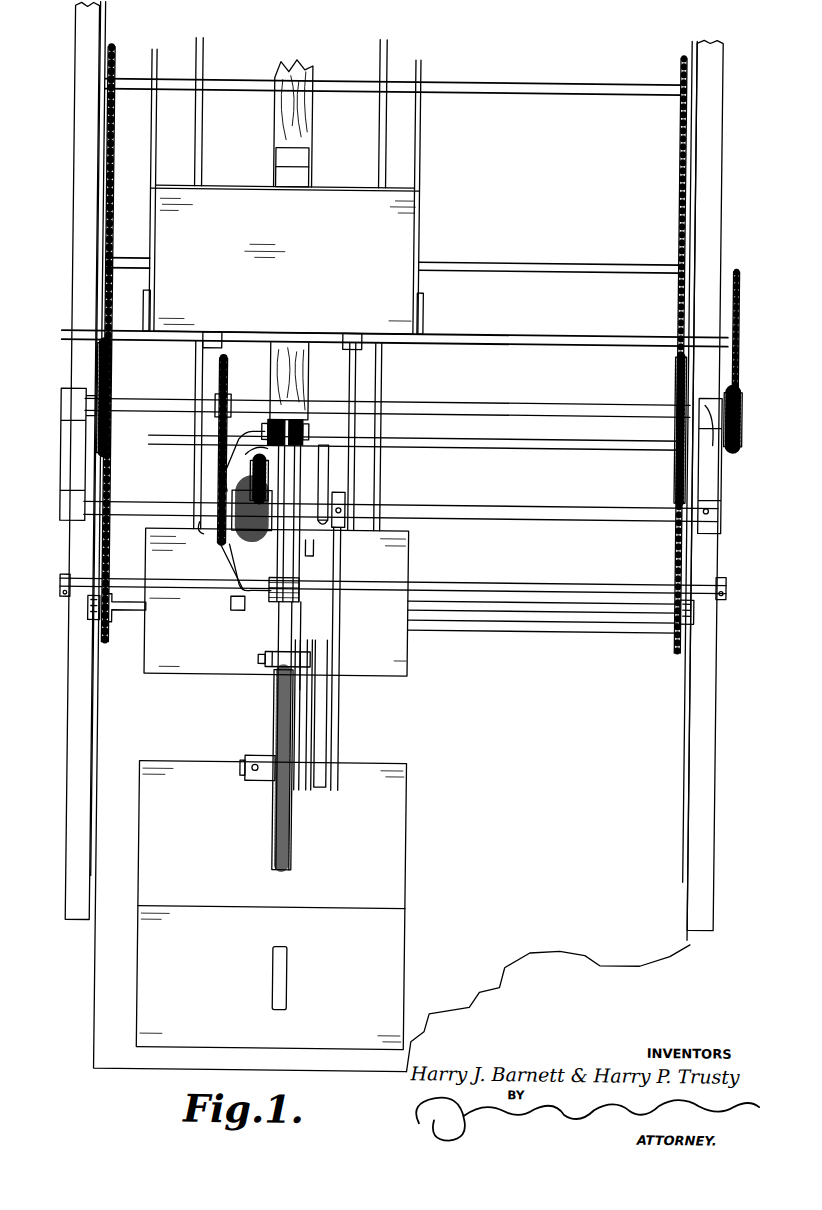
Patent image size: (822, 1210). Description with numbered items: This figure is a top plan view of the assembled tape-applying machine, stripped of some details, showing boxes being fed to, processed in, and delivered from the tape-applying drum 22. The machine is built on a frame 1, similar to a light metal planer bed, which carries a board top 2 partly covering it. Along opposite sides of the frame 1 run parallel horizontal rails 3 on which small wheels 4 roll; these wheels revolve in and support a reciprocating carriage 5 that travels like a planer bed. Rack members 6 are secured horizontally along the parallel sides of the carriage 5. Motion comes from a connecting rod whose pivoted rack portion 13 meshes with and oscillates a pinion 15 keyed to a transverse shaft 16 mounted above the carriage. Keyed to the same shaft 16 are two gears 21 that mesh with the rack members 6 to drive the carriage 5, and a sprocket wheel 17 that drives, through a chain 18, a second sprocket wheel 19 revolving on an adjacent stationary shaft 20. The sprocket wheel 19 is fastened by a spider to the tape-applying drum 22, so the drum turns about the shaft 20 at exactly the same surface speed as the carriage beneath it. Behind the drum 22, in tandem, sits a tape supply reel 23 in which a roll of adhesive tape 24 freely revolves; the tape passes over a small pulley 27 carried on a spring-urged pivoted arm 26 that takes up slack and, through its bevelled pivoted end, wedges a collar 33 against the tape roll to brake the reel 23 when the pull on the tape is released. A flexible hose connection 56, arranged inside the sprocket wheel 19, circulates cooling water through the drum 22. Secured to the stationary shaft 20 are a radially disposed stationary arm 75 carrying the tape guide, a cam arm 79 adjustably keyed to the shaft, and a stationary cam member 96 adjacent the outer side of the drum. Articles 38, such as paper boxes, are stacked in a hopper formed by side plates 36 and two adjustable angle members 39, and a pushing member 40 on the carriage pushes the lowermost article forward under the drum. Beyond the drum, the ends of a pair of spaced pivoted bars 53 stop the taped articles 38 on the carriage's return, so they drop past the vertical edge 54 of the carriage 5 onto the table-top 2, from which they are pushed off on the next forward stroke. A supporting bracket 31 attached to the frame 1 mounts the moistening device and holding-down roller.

The frame 1 is at (80, 157).
The board top 2 is at (95, 1004).
The rails 3 is at (101, 38).
The wheels 4 is at (89, 608).
The reciprocating carriage 5 is at (309, 119).
The rack members 6 is at (107, 191).
The pivoted rack portion 13 is at (736, 284).
The pinion 15 is at (740, 390).
The transverse shaft 16 is at (160, 405).
The sprocket wheel 17 is at (228, 390).
The chain 18 is at (225, 458).
The second sprocket wheel 19 is at (223, 548).
The stationary shaft 20 is at (140, 510).
The gears 21 is at (109, 383).
The tape-applying drum 22 is at (300, 422).
The tape supply reel 23 is at (278, 694).
The roll of adhesive tape 24 is at (253, 747).
The pivoted arm 26 is at (315, 720).
The pulley 27 is at (300, 657).
The supporting bracket 31 is at (61, 584).
The collar 33 is at (317, 774).
The side plates 36 is at (148, 135).
The articles 38 is at (402, 244).
The angle members 39 is at (142, 310).
The pushing member 40 is at (297, 179).
The pivoted bars 53 is at (362, 525).
The vertical edge 54 is at (571, 631).
The flexible hose connection 56 is at (218, 445).
The stationary arm 75 is at (330, 486).
The cam arm 79 is at (314, 554).
The stationary cam member 96 is at (260, 482).